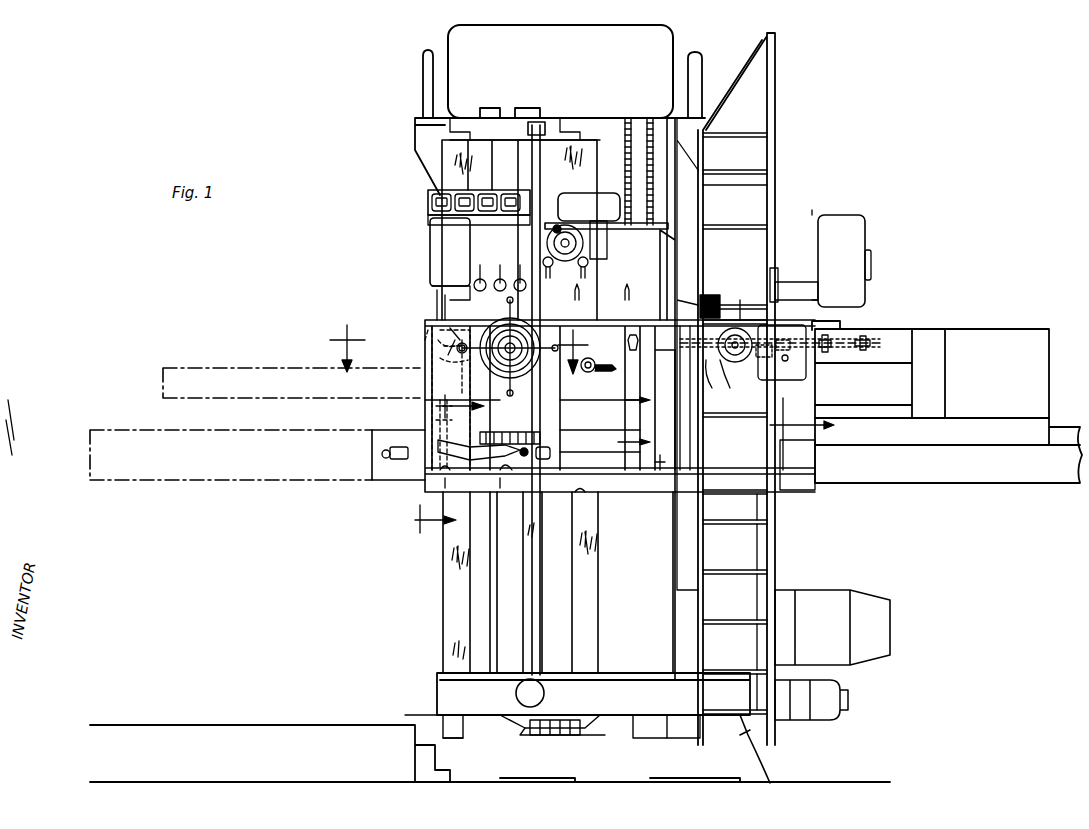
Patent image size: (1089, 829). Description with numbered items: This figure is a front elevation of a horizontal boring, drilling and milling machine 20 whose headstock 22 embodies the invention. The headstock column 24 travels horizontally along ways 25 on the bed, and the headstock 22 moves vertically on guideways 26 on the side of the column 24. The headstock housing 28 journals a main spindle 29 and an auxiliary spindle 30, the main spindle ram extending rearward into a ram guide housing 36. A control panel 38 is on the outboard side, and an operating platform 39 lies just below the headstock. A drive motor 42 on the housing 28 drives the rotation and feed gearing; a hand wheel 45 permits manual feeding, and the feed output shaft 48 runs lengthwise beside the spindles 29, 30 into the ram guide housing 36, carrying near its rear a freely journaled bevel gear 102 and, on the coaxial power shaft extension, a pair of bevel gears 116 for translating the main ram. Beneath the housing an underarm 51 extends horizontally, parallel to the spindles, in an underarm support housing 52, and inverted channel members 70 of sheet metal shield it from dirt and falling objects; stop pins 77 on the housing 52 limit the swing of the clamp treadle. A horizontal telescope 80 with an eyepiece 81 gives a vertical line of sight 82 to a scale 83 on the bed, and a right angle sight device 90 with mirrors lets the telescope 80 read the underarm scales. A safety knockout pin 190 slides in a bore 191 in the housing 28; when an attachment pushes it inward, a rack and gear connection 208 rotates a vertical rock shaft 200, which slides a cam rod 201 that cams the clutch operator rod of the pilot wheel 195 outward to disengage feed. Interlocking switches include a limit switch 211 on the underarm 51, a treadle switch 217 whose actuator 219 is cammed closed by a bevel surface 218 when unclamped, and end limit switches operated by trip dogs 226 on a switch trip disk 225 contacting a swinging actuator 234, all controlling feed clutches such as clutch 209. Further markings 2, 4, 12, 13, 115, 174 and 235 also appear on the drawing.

The section line 2 is at (454, 462).
The section line 4 is at (767, 392).
The feed direction 12 is at (625, 418).
The section line 13 is at (454, 347).
The machine tool 20 is at (414, 212).
The headstock 22 is at (432, 262).
The headstock column 24 is at (443, 604).
The ways 25 is at (475, 713).
The guideways 26 is at (448, 563).
The headstock housing 28 is at (432, 233).
The main spindle 29 is at (432, 375).
The auxiliary spindle 30 is at (425, 338).
The ram guide housing 36 is at (1005, 332).
The control panel 38 is at (630, 287).
The operating platform 39 is at (583, 492).
The drive motor 42 is at (850, 216).
The hand wheel 45 is at (437, 305).
The output shaft 48 is at (604, 353).
The underarm 51 is at (385, 478).
The underarm support housing 52 is at (418, 492).
The inverted channel members 70 is at (1043, 428).
The stop pins 77 is at (477, 477).
The telescope 80 is at (632, 229).
The eyepiece 81 is at (553, 228).
The line of sight 82 is at (672, 636).
The scale 83 is at (700, 730).
The right angle sight device 90 is at (655, 425).
The bevel gear 102 is at (644, 351).
The collar 115 is at (846, 338).
The bevel gears 116 is at (870, 338).
The bracket 174 is at (726, 384).
The safety knockout pin 190 is at (430, 418).
The bore 191 is at (484, 410).
The pilot wheel 195 is at (522, 366).
The vertical rock shaft 200 is at (432, 392).
The cam rod 201 is at (456, 328).
The rack and gear connection 208 is at (510, 437).
The clutch 209 is at (430, 352).
The limit switch 211 is at (388, 449).
The limit switch 217 is at (550, 458).
The bevel surface 218 is at (530, 475).
The actuator 219 is at (528, 449).
The switch trip disk 225 is at (765, 378).
The trip dogs 226 is at (735, 330).
The swinging actuator 234 is at (773, 360).
The block 235 is at (776, 348).